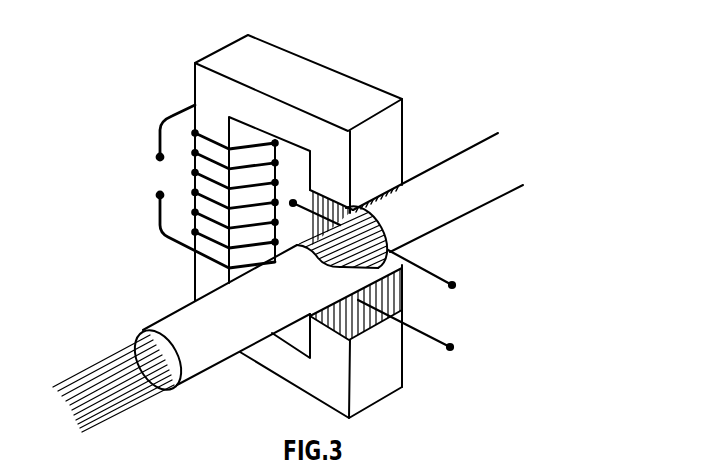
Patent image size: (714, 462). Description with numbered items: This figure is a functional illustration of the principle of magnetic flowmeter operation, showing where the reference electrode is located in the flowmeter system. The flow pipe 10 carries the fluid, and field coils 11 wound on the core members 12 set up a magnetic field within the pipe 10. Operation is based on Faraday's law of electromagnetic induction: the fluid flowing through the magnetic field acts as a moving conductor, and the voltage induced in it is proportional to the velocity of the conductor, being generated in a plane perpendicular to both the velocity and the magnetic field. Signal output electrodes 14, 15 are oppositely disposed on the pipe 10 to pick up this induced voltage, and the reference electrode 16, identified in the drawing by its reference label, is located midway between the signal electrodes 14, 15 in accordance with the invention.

The flow pipe 10 is at (458, 213).
The field coils 11 is at (160, 217).
The core members 12 is at (342, 88).
The signal output electrode 14 is at (293, 203).
The signal output electrode 15 is at (440, 273).
The reference electrode 16 is at (442, 330).